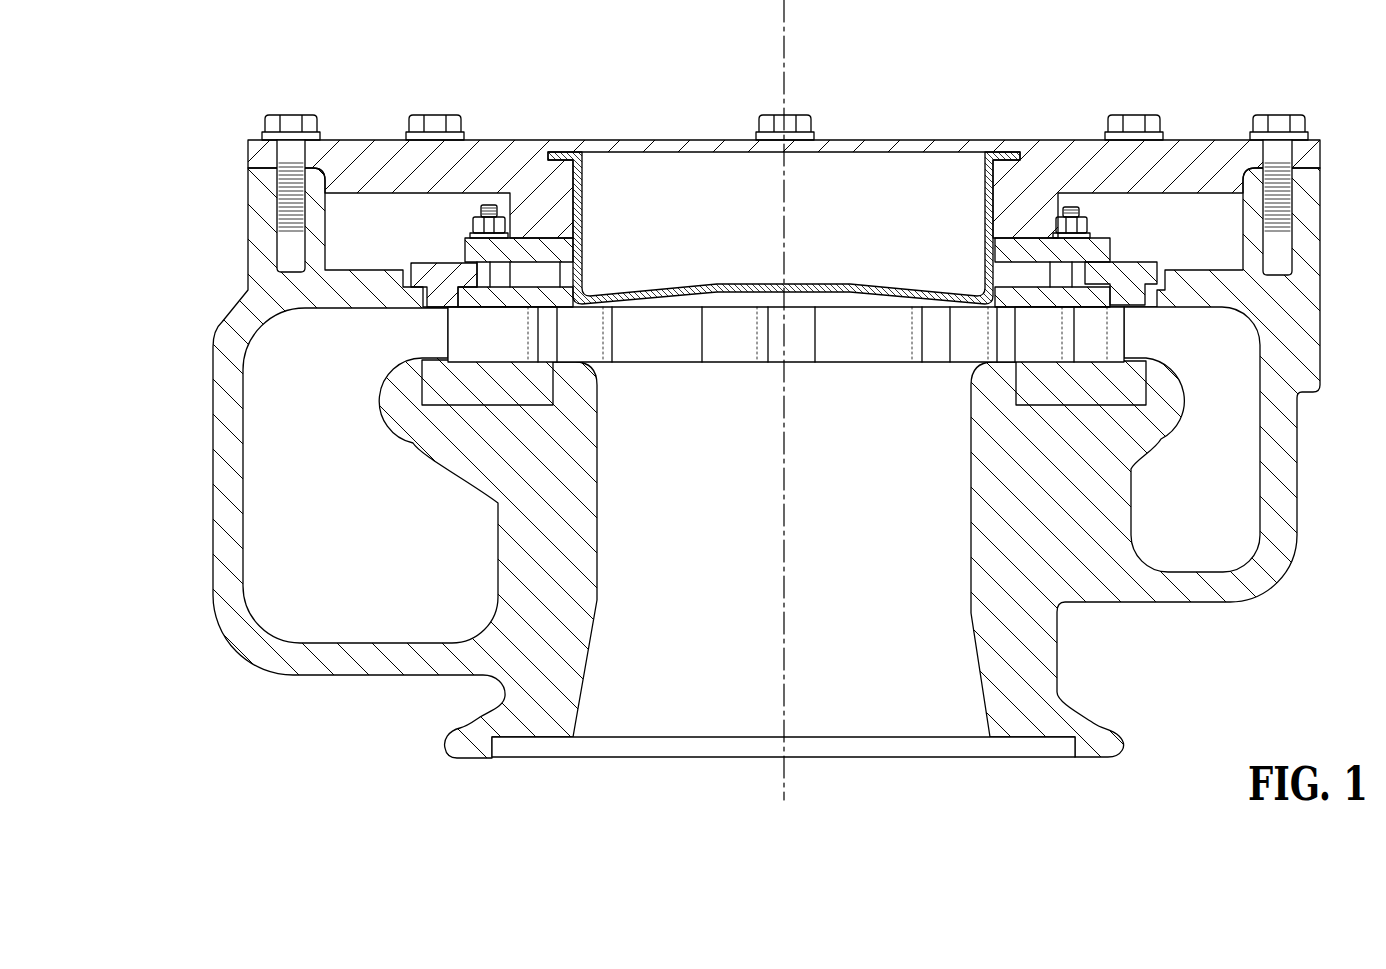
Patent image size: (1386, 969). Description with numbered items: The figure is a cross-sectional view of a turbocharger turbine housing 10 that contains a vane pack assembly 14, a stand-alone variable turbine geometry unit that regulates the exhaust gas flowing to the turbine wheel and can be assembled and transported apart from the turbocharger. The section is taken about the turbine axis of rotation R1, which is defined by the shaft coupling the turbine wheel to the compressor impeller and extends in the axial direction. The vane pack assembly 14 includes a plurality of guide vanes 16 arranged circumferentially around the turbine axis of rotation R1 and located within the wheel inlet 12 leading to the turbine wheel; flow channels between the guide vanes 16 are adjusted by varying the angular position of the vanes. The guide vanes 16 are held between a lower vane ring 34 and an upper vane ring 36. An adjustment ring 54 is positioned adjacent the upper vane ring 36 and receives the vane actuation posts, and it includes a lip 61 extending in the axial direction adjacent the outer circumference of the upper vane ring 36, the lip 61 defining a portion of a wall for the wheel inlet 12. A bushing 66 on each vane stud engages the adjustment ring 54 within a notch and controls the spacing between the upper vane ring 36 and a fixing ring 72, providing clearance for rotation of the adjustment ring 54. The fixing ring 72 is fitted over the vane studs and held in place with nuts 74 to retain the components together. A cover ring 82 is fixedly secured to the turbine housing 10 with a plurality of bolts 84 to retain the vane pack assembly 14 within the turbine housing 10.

The turbine housing 10 is at (1313, 333).
The wheel inlet 12 is at (243, 422).
The vane pack assembly 14 is at (590, 186).
The guide vane 16 is at (1113, 323).
The lower vane ring 34 is at (467, 406).
The upper vane ring 36 is at (1003, 282).
The adjustment ring 54 is at (1143, 262).
The lip 61 is at (435, 310).
The bushing 66 is at (493, 276).
The fixing ring 72 is at (572, 252).
The nut 74 is at (1080, 212).
The cover ring 82 is at (382, 140).
The bolt 84 is at (290, 116).
The turbine axis of rotation R1 is at (788, 792).